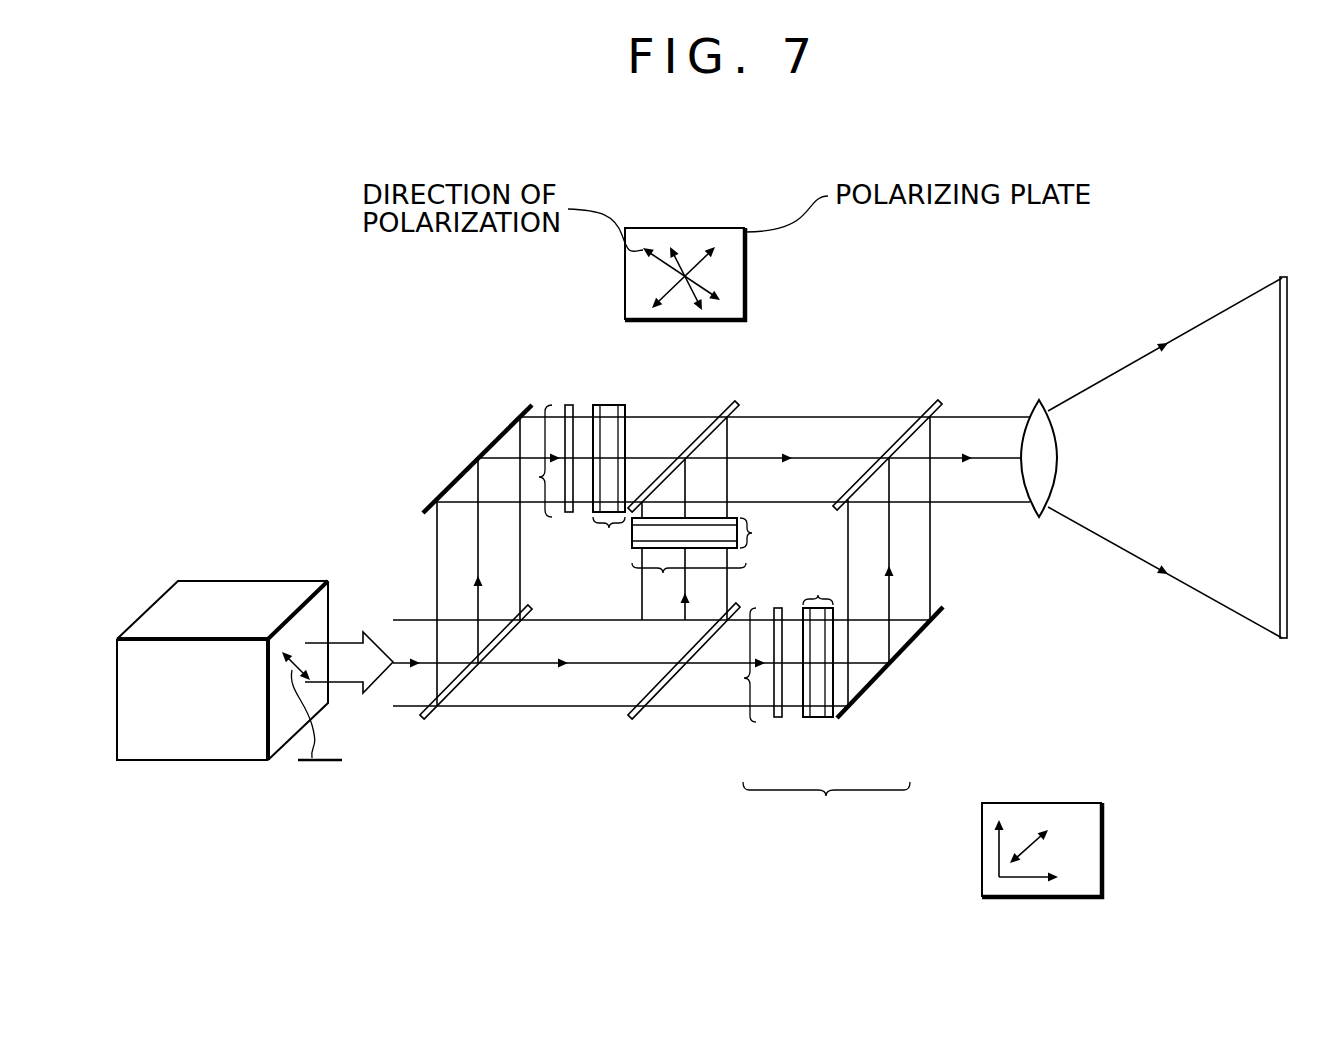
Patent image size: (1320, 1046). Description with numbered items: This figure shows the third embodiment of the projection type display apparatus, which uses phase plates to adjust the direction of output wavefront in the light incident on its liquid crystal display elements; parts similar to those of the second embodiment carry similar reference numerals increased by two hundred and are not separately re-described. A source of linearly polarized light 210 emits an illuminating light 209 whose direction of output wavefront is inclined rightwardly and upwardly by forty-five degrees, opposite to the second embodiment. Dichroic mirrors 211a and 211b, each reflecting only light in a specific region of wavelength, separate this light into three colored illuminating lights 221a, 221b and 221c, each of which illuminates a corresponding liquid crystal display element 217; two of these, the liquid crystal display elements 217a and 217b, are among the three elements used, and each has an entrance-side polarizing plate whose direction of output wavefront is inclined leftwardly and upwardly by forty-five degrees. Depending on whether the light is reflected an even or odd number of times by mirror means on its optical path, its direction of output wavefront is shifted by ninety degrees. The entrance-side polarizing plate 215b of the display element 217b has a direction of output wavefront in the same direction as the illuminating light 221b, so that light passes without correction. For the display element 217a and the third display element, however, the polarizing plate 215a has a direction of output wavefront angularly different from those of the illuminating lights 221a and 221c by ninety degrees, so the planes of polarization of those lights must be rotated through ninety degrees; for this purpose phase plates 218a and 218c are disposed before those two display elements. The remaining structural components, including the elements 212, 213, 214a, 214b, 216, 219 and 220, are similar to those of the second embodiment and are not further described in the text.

The illuminating light 209 is at (345, 643).
The source of linearly polarized light 210 is at (225, 762).
The dichroic mirror 211a is at (423, 720).
The dichroic mirror 211b is at (633, 720).
The mirror 212 is at (462, 478).
The mirror 213 is at (913, 638).
The half mirror 214a is at (738, 404).
The half mirror 214b is at (940, 403).
The entrance-side polarizing plate 215a is at (597, 404).
The entrance-side polarizing plate 215b is at (624, 404).
The liquid crystal cell 216 is at (608, 404).
The liquid crystal display element 217 is at (845, 834).
The liquid crystal display element 217a is at (608, 528).
The liquid crystal display element 217b is at (752, 533).
The phase plate 218a is at (775, 720).
The phase plate 218c is at (568, 513).
The projection lens 219 is at (1039, 518).
The screen 220 is at (1283, 640).
The illuminating light 221a is at (717, 245).
The illuminating light 221b is at (670, 245).
The illuminating light 221c is at (539, 477).